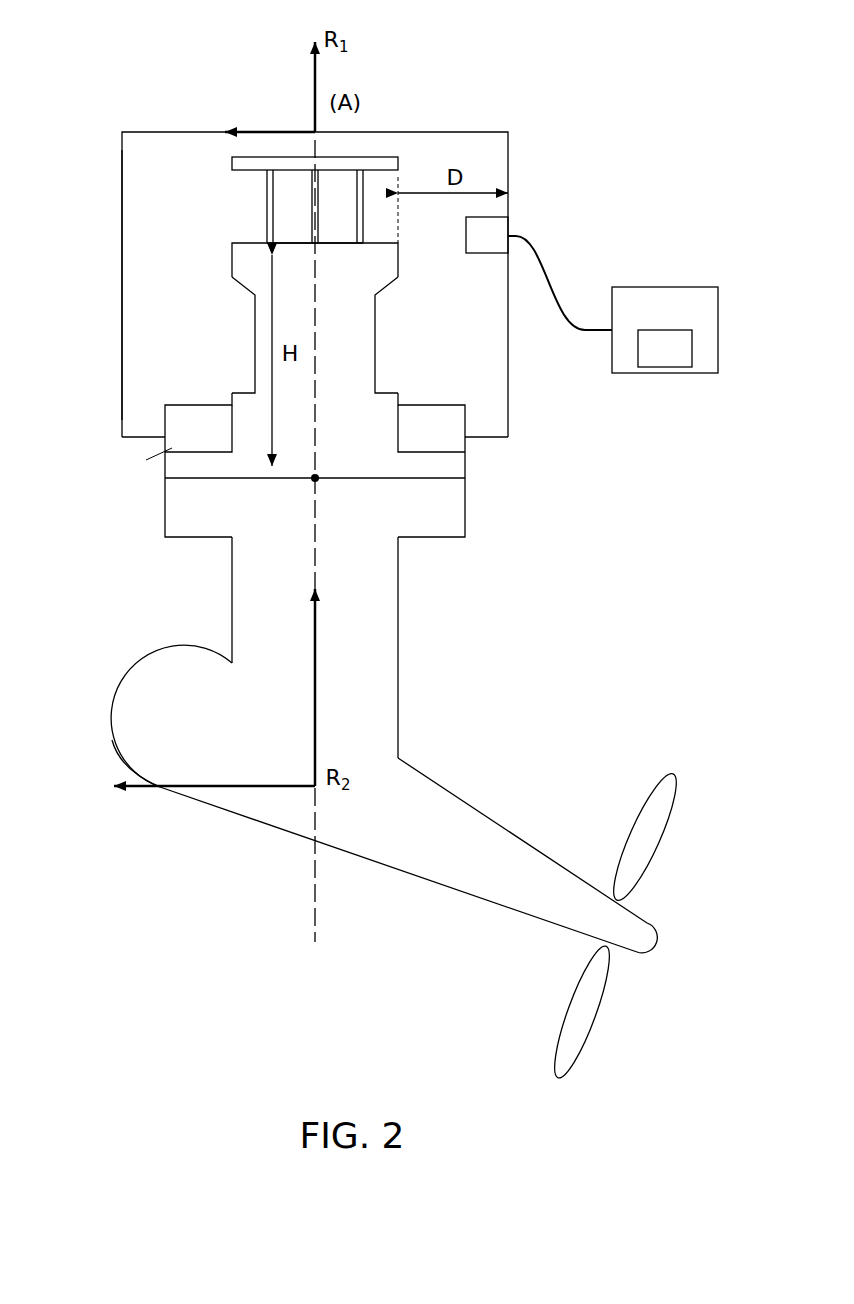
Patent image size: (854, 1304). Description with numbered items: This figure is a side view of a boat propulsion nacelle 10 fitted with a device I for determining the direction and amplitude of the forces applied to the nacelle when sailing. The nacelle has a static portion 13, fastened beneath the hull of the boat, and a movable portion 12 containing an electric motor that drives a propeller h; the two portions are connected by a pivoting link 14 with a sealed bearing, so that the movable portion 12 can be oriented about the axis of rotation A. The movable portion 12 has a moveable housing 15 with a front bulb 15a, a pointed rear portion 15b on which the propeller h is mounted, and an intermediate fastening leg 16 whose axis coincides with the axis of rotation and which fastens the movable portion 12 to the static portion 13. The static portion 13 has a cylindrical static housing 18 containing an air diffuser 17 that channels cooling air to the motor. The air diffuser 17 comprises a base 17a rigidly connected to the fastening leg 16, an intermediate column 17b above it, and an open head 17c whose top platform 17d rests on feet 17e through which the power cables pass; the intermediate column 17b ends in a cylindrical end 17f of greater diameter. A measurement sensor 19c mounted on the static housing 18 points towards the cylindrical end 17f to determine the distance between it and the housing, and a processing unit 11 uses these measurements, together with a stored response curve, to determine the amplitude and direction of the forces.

The boat propulsion nacelle 10 is at (290, 928).
The processing unit 11 is at (668, 287).
The movable portion 12 is at (96, 571).
The static portion 13 is at (121, 125).
The pivoting link 14 is at (523, 437).
The moveable housing 15 is at (108, 703).
The front bulb 15a is at (123, 748).
The pointed rear portion 15b is at (500, 912).
The intermediate fastening leg 16 is at (431, 546).
The air diffuser 17 is at (255, 328).
The base 17a is at (465, 468).
The intermediate column 17b is at (376, 330).
The open head 17c is at (227, 193).
The top platform 17d is at (232, 160).
The feet 17e is at (267, 222).
The cylindrical end 17f is at (232, 255).
The cylindrical static housing 18 is at (122, 213).
The measurement sensor 19c is at (510, 218).
The propeller h is at (678, 807).
The device for determining the characteristics of the forces I is at (433, 70).